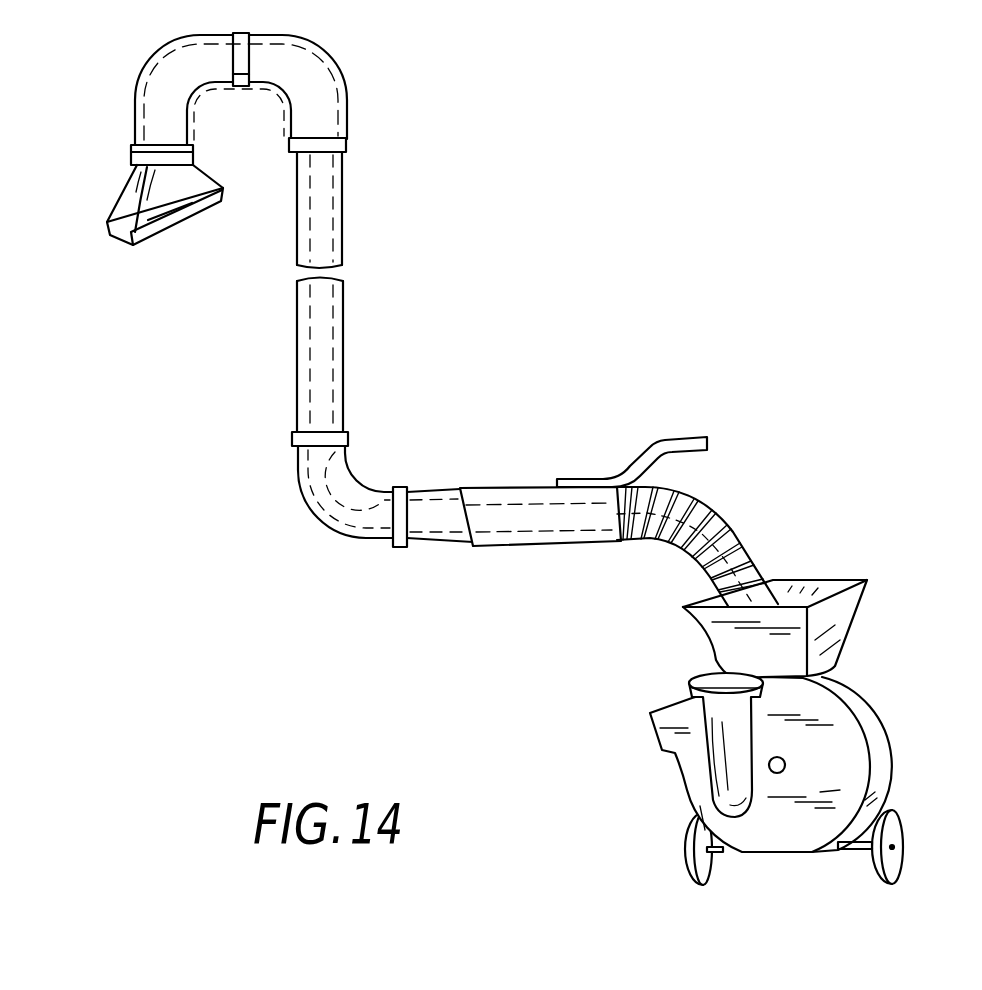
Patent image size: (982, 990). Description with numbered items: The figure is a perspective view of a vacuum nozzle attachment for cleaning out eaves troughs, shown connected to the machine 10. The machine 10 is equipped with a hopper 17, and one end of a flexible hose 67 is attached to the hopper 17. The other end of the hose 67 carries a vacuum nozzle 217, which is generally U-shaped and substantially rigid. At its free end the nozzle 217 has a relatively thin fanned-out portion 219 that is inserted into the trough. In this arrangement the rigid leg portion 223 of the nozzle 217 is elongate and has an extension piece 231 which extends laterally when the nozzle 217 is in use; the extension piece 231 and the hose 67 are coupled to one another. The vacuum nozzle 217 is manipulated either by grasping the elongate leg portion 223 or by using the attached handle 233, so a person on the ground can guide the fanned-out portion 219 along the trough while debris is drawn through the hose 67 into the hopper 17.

The machine 10 is at (627, 712).
The hopper 17 is at (810, 577).
The flexible hose 67 is at (705, 514).
The vacuum nozzle 217 is at (111, 131).
The fanned-out portion 219 is at (118, 235).
The rigid leg portion 223 is at (332, 353).
The extension piece 231 is at (427, 502).
The handle 233 is at (682, 433).